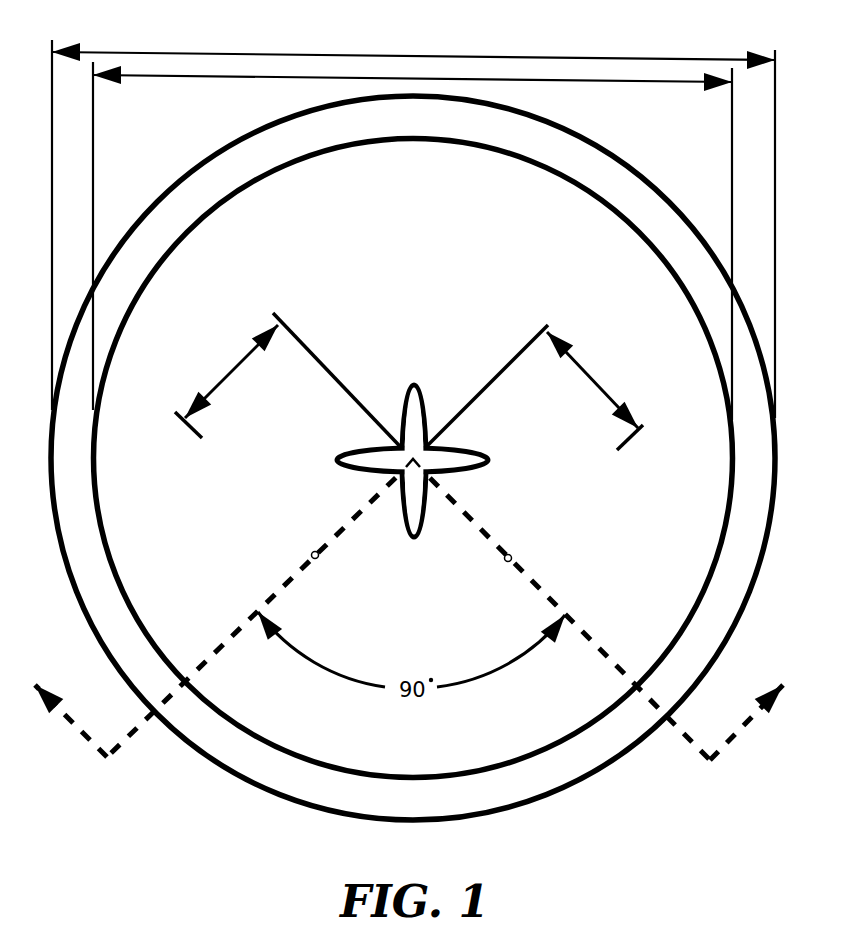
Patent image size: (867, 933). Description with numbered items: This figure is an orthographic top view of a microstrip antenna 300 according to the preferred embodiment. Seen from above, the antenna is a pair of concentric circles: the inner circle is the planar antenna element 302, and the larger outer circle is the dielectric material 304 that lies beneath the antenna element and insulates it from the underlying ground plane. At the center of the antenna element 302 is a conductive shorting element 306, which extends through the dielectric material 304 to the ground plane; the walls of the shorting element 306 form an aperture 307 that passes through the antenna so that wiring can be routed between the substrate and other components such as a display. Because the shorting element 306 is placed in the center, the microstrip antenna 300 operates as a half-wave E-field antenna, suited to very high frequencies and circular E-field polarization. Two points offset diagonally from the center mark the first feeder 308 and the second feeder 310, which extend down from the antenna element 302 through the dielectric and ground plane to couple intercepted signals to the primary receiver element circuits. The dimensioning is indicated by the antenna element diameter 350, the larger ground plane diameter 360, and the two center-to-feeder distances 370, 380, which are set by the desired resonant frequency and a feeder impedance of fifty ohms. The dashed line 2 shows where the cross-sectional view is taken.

The microstrip antenna 300 is at (413, 484).
The planar antenna element 302 is at (568, 258).
The dielectric material 304 is at (583, 168).
The conductive shorting element 306 is at (413, 385).
The aperture 307 is at (430, 456).
The first feeder 308 is at (511, 557).
The second feeder 310 is at (318, 558).
The antenna element diameter 350 is at (248, 78).
The ground plane diameter 360 is at (705, 58).
The center-to-feeder distance 370 is at (582, 370).
The center-to-feeder distance 380 is at (222, 378).
The section line 2— 2 is at (408, 610).